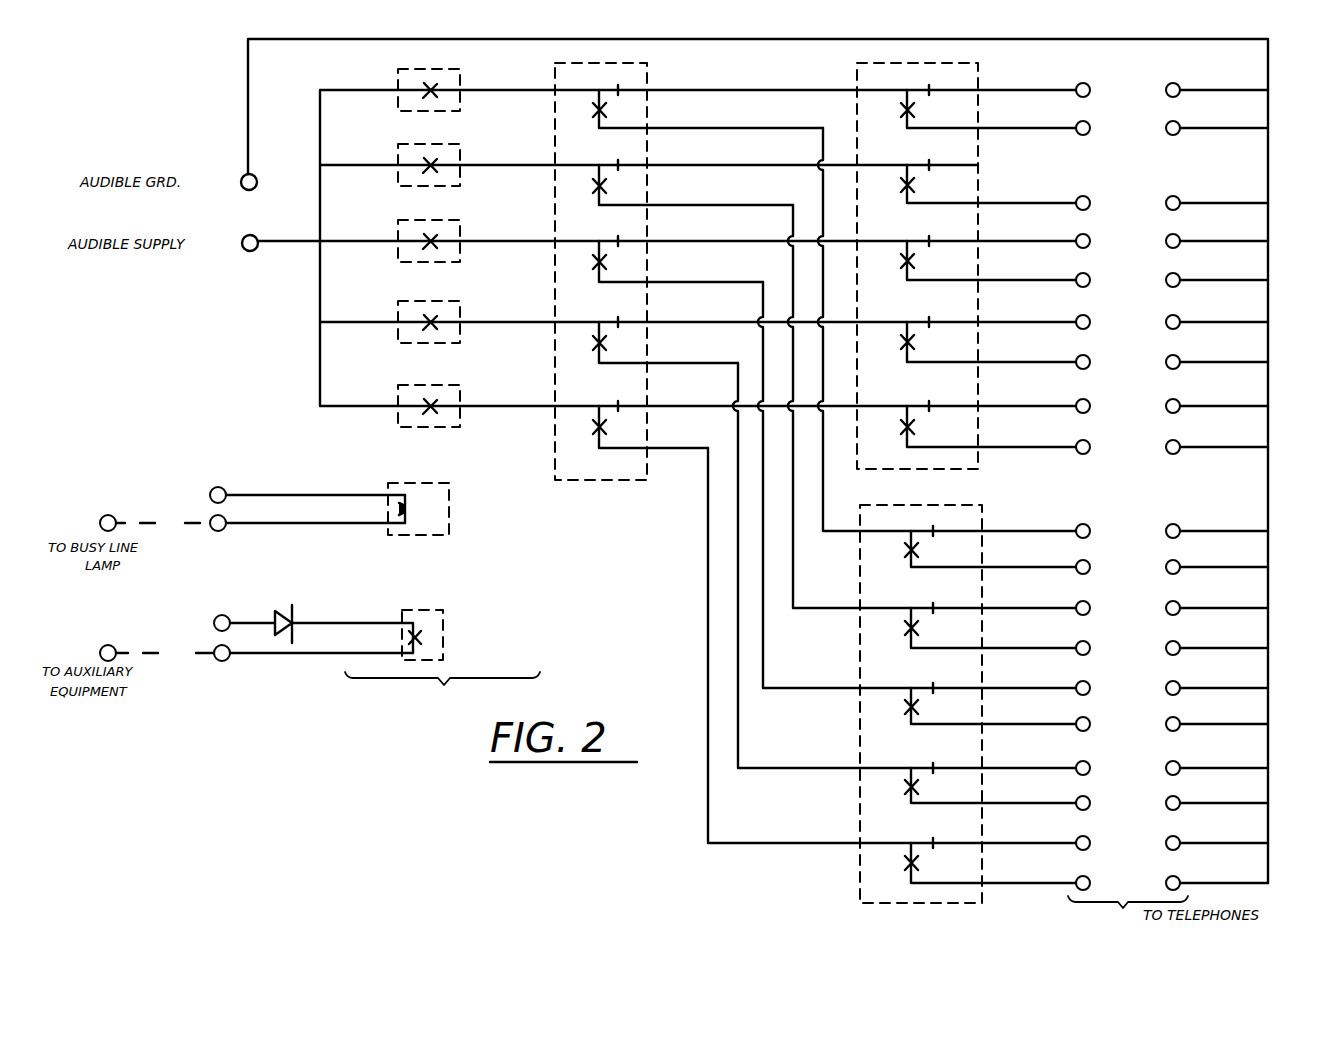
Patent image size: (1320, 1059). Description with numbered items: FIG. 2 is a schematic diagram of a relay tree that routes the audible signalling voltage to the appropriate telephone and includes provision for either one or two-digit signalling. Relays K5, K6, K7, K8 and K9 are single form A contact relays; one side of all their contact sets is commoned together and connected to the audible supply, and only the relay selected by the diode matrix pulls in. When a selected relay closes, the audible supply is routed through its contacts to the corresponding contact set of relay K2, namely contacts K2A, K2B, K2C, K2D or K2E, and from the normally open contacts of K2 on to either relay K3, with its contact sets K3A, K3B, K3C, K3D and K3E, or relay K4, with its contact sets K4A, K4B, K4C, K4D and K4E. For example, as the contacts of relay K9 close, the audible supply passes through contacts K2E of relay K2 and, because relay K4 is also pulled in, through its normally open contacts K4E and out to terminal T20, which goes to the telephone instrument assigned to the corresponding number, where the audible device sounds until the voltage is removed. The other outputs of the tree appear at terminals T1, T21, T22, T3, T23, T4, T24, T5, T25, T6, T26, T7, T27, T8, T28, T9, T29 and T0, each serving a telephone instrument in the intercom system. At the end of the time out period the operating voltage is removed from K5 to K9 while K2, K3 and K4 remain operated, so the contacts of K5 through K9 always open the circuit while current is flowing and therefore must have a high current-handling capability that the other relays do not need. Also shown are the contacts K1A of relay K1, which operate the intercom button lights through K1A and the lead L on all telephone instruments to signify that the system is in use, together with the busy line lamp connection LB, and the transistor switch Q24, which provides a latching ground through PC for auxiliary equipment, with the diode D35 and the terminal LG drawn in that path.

The relay K1 is at (418, 509).
The relay contacts K1A is at (403, 517).
The relay K2 is at (617, 271).
The relay K2 contact A K2A is at (691, 98).
The relay K2 contact B K2B is at (676, 174).
The relay K2 contact C K2C is at (661, 250).
The relay K2 contact D K2D is at (648, 331).
The relay contacts K2E is at (633, 416).
The relay K3 is at (933, 266).
The relay K3 contact A K3A is at (968, 98).
The relay K3 contact B K3B is at (968, 173).
The relay K3 contact C K3C is at (968, 249).
The relay K3 contact D K3D is at (969, 331).
The relay K3 contact E K3E is at (969, 415).
The relay K4 is at (936, 704).
The relay K4 contact A K4A is at (970, 538).
The relay K4 contact B K4B is at (971, 617).
The relay K4 contact C K4C is at (971, 695).
The relay K4 contact D K4D is at (971, 774).
The relay contacts K4E is at (971, 852).
The relay K5 is at (445, 89).
The relay K6 is at (445, 164).
The relay K7 is at (445, 240).
The relay K8 is at (445, 321).
The relay K9 is at (445, 405).
The telephone terminal T1 is at (1063, 82).
The telephone terminal T21 is at (1061, 121).
The telephone terminal T22 is at (1061, 196).
The telephone terminal T3 is at (1063, 234).
The telephone terminal T23 is at (1061, 273).
The telephone terminal T4 is at (1063, 314).
The telephone terminal T24 is at (1061, 355).
The telephone terminal T5 is at (1063, 398).
The telephone terminal T25 is at (1061, 440).
The telephone terminal T6 is at (1063, 524).
The telephone terminal T26 is at (1061, 560).
The telephone terminal T7 is at (1063, 601).
The telephone terminal T27 is at (1061, 641).
The telephone terminal T8 is at (1063, 681).
The telephone terminal T28 is at (1061, 717).
The telephone terminal T9 is at (1063, 760).
The telephone terminal T29 is at (1061, 796).
The telephone terminal T0 is at (1063, 836).
The terminal T20 is at (1059, 876).
The busy lamp terminal LB is at (285, 495).
The intercom button light connection L is at (252, 524).
The lamp ground terminal LG is at (292, 634).
The latching ground connection PC is at (256, 654).
The diode D35 is at (305, 616).
The transistor switch Q24 is at (463, 635).